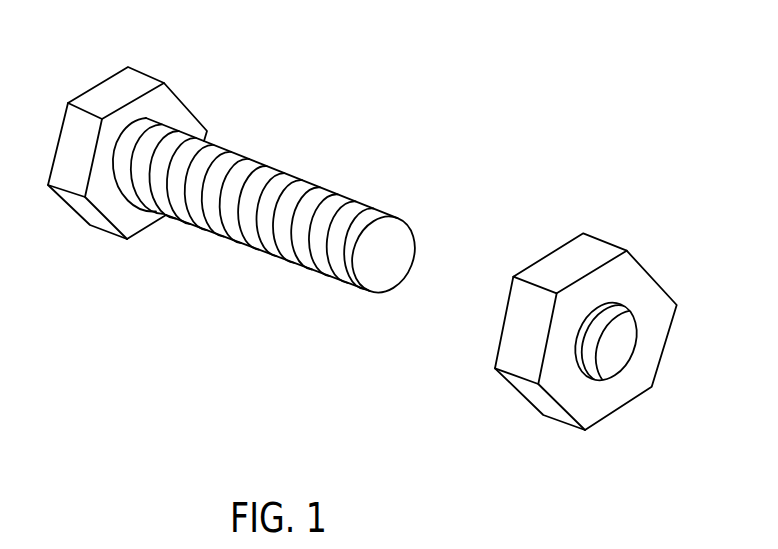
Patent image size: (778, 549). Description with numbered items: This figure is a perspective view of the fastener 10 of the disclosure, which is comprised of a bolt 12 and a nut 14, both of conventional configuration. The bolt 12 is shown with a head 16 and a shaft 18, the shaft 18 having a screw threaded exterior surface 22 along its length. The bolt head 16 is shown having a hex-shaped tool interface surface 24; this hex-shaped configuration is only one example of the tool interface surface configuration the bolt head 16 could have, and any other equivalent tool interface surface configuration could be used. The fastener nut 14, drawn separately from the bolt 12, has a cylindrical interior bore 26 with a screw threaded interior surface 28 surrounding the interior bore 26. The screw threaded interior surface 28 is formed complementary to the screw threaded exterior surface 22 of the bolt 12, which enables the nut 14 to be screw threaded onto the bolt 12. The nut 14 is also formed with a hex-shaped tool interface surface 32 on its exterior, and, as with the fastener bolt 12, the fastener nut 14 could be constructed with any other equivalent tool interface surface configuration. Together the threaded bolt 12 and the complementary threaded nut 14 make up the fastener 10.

The fastener 10 is at (300, 88).
The bolt 12 is at (231, 243).
The nut 14 is at (576, 434).
The head 16 is at (97, 102).
The shaft 18 is at (396, 238).
The screw threaded exterior surface 22 is at (305, 188).
The hex-shaped tool interface surface 24 is at (137, 80).
The cylindrical interior bore 26 is at (627, 361).
The screw threaded interior surface 28 is at (634, 333).
The hex-shaped tool interface surface 32 is at (595, 255).